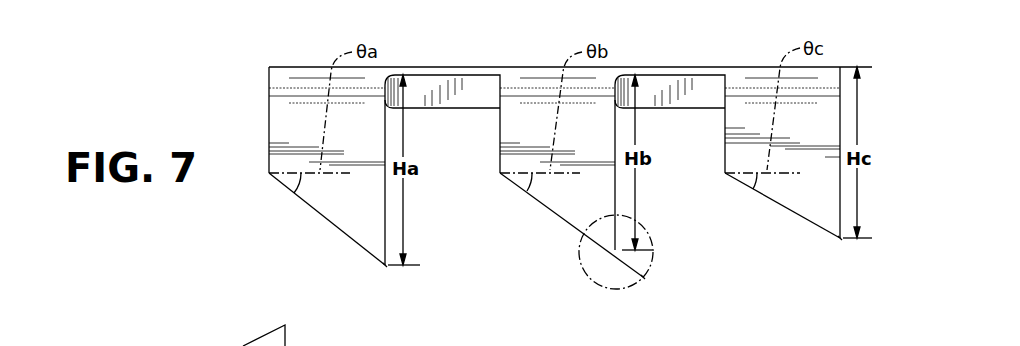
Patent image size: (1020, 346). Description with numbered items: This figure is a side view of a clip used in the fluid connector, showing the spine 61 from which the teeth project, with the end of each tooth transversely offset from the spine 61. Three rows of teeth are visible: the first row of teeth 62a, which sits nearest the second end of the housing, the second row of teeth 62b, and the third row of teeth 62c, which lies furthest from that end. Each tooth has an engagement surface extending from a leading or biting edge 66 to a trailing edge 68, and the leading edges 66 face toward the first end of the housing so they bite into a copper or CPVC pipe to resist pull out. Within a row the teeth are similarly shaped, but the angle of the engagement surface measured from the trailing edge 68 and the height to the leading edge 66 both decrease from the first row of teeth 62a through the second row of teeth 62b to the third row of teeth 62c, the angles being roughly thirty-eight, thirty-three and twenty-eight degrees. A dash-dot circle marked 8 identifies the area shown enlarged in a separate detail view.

The spine 61 is at (663, 83).
The first row of teeth 62a is at (330, 190).
The second row of teeth 62b is at (573, 205).
The third row of teeth 62c is at (807, 205).
The leading edge 66 is at (386, 267).
The trailing edge 68 is at (269, 173).
The detail callout for FIG. 8 is at (615, 292).